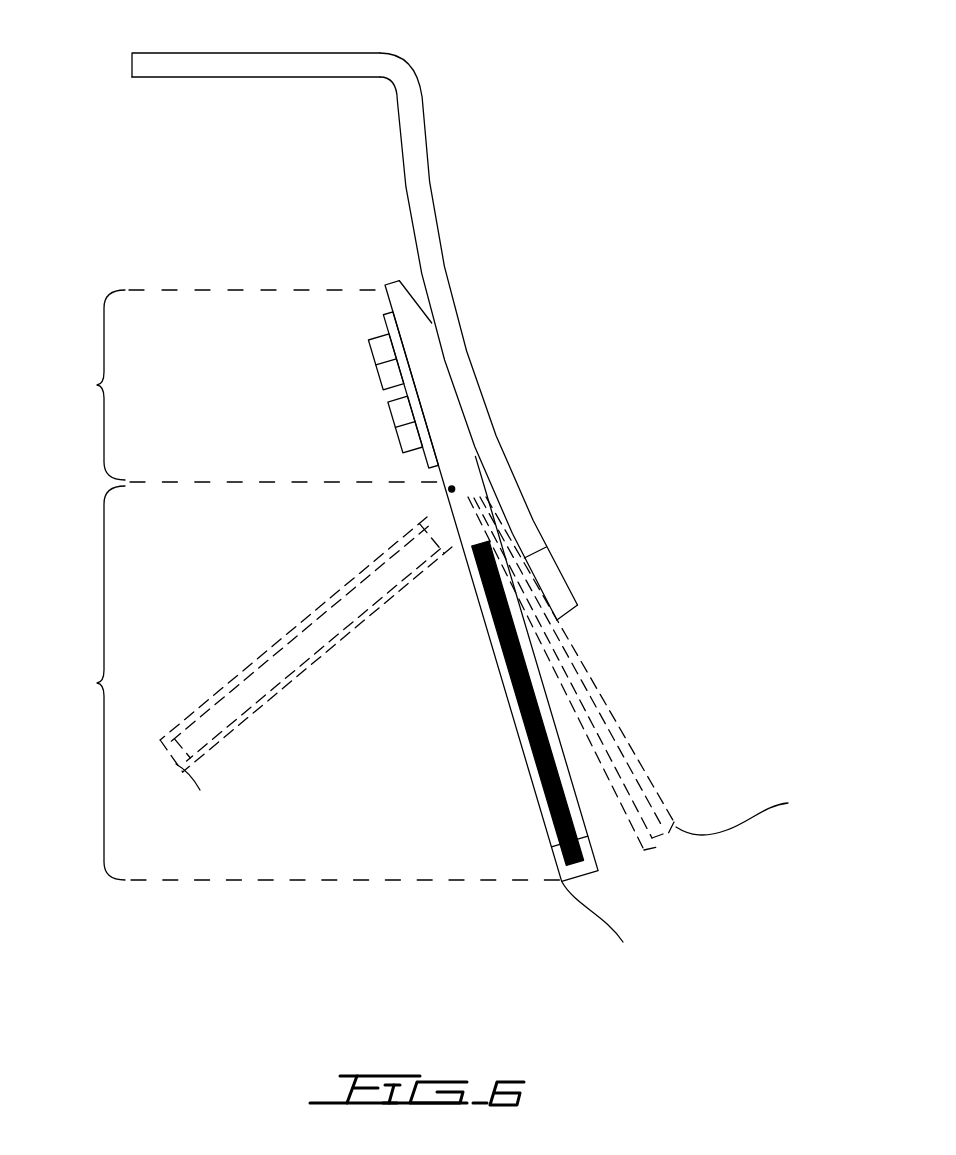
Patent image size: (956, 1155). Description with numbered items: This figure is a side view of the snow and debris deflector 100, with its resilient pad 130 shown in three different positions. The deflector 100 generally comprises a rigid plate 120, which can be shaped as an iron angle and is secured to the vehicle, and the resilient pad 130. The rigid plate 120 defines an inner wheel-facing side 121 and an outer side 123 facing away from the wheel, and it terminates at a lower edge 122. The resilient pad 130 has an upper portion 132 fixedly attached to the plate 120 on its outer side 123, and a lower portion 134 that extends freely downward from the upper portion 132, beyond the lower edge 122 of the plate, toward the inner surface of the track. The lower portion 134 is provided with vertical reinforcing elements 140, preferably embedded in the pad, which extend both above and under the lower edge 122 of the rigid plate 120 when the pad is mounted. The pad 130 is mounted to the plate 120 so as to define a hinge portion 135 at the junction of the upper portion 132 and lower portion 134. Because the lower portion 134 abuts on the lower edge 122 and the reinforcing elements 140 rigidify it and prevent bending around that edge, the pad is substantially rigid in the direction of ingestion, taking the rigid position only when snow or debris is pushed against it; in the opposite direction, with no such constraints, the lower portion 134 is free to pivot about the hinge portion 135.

The deflector 100 is at (730, 116).
The rigid plate 120 is at (208, 115).
The inner wheel-facing side 121 is at (456, 156).
The lower edge 122 is at (607, 598).
The outer side 123 is at (373, 212).
The resilient pad 130 is at (703, 904).
The upper portion 132 is at (211, 385).
The lower portion 134 is at (299, 681).
The hinge portion 135 is at (452, 489).
The reinforcing elements 140 is at (602, 727).